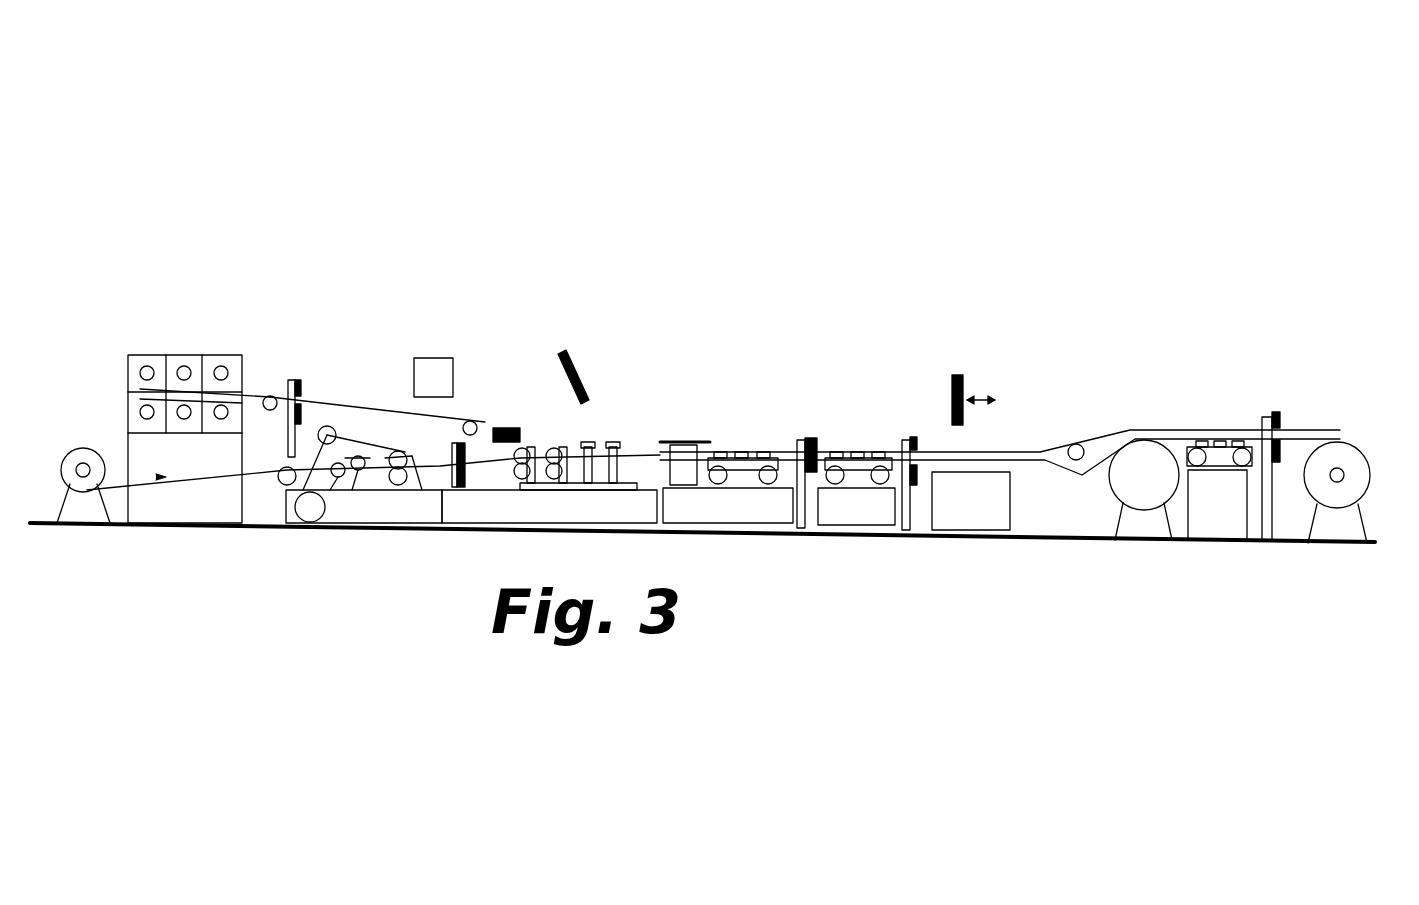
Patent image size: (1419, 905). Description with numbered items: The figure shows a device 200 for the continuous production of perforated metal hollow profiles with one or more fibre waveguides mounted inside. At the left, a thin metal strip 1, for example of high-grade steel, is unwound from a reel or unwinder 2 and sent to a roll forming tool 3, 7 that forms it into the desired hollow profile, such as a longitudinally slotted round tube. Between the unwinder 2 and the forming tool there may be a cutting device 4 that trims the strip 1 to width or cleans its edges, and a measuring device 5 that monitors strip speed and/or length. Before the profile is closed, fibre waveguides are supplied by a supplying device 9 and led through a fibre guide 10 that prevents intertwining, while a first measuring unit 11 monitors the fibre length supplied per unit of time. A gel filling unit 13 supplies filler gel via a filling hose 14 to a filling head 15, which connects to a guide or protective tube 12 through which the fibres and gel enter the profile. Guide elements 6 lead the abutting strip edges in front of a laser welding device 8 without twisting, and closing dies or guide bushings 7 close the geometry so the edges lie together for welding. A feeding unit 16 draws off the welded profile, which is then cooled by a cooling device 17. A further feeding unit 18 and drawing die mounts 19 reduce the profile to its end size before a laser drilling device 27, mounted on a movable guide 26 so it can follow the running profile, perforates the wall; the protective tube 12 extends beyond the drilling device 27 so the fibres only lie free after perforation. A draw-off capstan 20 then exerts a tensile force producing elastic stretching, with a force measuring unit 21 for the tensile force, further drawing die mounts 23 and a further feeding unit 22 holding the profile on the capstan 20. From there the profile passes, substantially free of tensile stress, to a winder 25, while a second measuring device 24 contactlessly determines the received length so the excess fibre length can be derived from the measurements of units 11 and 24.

The device 200 is at (345, 128).
The metal strip 1 is at (120, 485).
The reel or unwinder 2 is at (83, 443).
The roll forming tool 3 is at (628, 470).
The cutting device 4 is at (383, 455).
The measuring device 5 is at (440, 466).
The guide elements 6 is at (592, 437).
The closing dies or guide bushings 7 is at (615, 437).
The laser welding device 8 is at (565, 353).
The supplying device 9 is at (138, 350).
The fibre guide 10 is at (272, 390).
The first measuring unit 11 is at (297, 362).
The guide or protective tube 12 is at (547, 437).
The gel filling unit 13 is at (433, 353).
The filling hose 14 is at (472, 400).
The filling head 15 is at (507, 421).
The feeding unit 16 is at (738, 443).
The cooling device 17 is at (687, 433).
The further feeding unit 18 is at (847, 447).
The drawing die mounts 19 is at (805, 423).
The draw-off capstan 20 is at (1145, 433).
The force measuring unit 21 is at (1080, 442).
The further feeding unit 22 is at (1208, 442).
The drawing die mounts 23 is at (907, 430).
The second measuring device 24 is at (1265, 407).
The winder 25 is at (1357, 433).
The movable guide 26 is at (988, 467).
The laser drilling device 27 is at (958, 372).